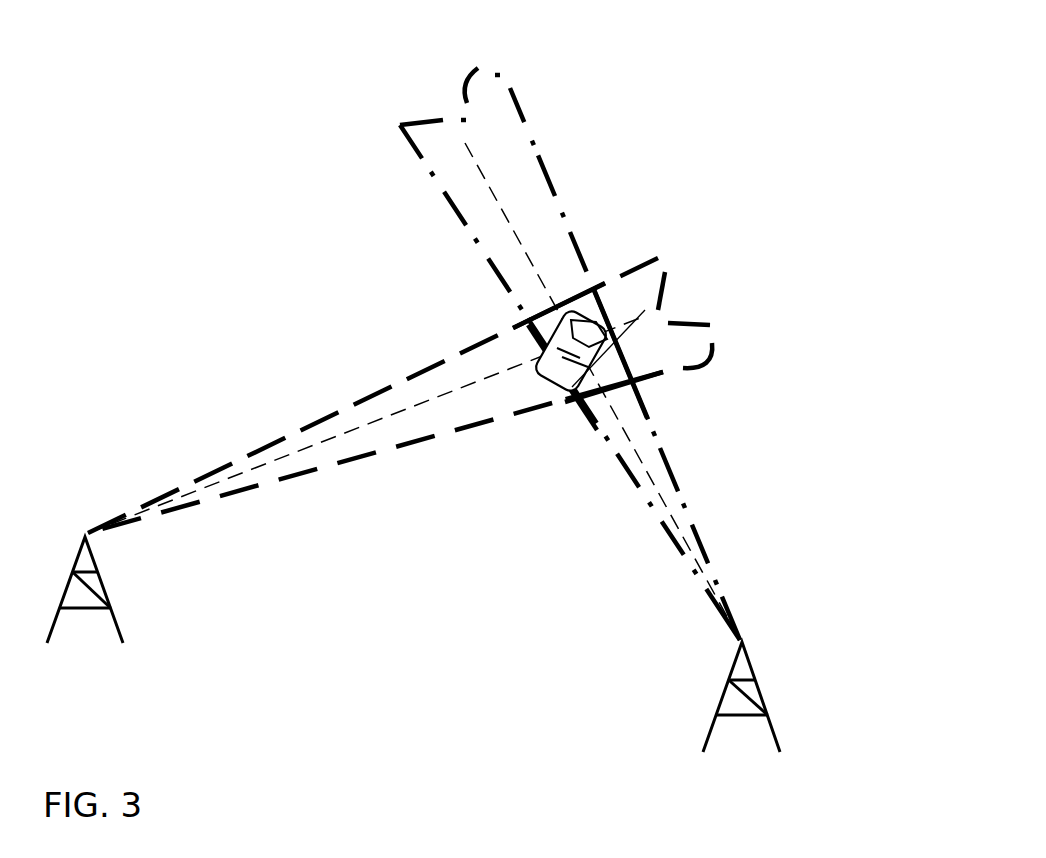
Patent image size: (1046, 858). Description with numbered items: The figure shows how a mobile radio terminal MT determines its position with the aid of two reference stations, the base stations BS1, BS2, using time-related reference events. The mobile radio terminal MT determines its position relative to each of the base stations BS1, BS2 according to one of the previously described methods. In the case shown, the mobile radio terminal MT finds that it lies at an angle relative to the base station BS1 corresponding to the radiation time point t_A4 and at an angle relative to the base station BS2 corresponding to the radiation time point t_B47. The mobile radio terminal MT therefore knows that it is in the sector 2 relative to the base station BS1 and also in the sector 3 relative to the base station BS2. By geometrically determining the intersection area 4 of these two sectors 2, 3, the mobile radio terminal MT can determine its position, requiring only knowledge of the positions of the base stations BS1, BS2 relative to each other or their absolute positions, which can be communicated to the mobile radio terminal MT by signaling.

The sector 2 is at (630, 292).
The sector 3 is at (517, 197).
The intersection area 4 is at (550, 323).
The mobile radio terminal MT is at (590, 352).
The base station BS1 is at (127, 603).
The base station BS2 is at (783, 702).